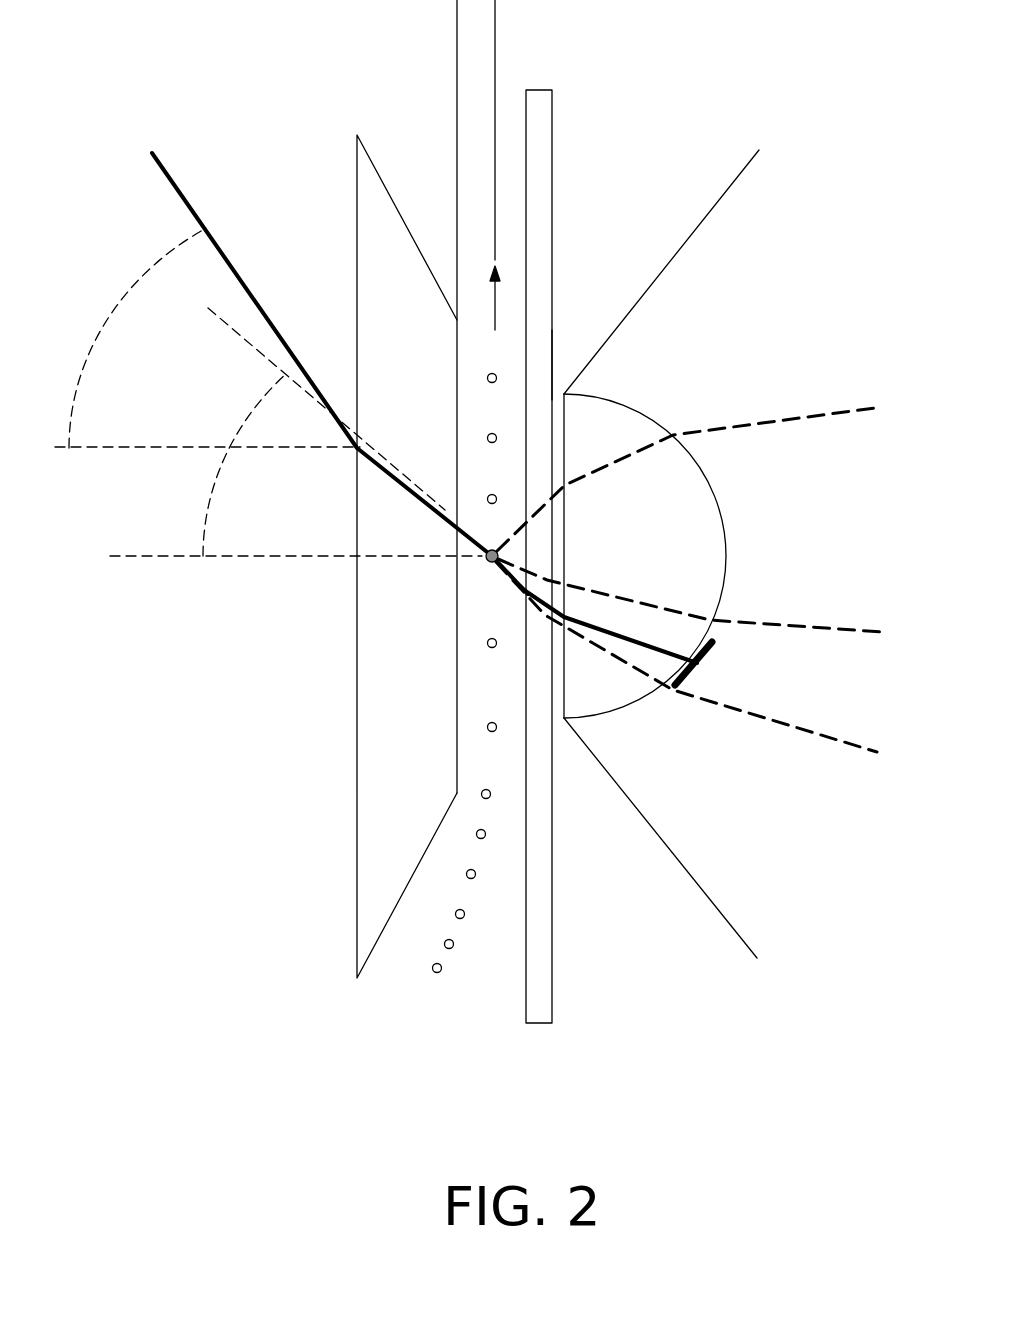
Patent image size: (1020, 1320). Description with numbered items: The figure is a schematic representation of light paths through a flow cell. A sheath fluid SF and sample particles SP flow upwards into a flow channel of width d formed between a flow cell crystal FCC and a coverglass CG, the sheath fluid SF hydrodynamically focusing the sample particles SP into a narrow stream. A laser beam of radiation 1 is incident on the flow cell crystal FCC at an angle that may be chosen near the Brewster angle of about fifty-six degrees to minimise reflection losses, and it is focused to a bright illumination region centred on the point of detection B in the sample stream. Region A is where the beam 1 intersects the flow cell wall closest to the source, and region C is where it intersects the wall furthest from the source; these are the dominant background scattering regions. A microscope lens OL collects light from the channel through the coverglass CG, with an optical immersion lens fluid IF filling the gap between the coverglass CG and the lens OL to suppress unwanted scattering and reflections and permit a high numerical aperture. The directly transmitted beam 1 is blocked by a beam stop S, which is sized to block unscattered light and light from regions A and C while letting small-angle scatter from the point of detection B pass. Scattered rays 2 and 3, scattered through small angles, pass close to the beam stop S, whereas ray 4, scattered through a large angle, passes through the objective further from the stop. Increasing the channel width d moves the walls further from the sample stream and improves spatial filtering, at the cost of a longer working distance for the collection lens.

The beam of radiation 1 is at (201, 186).
The scattered ray 2 is at (842, 729).
The scattered ray 3 is at (805, 614).
The scattered ray 4 is at (802, 406).
The region A is at (472, 500).
The point of detection B is at (477, 565).
The region C is at (511, 596).
The beam stop S is at (710, 665).
The optical immersion lens fluid IF is at (568, 352).
The coverglass CG is at (546, 875).
The microscope lens OL is at (704, 921).
The flow cell crystal FCC is at (362, 869).
The sheath fluid SF is at (371, 994).
The sample particles SP is at (427, 992).
The flow channel dimension d is at (564, 30).